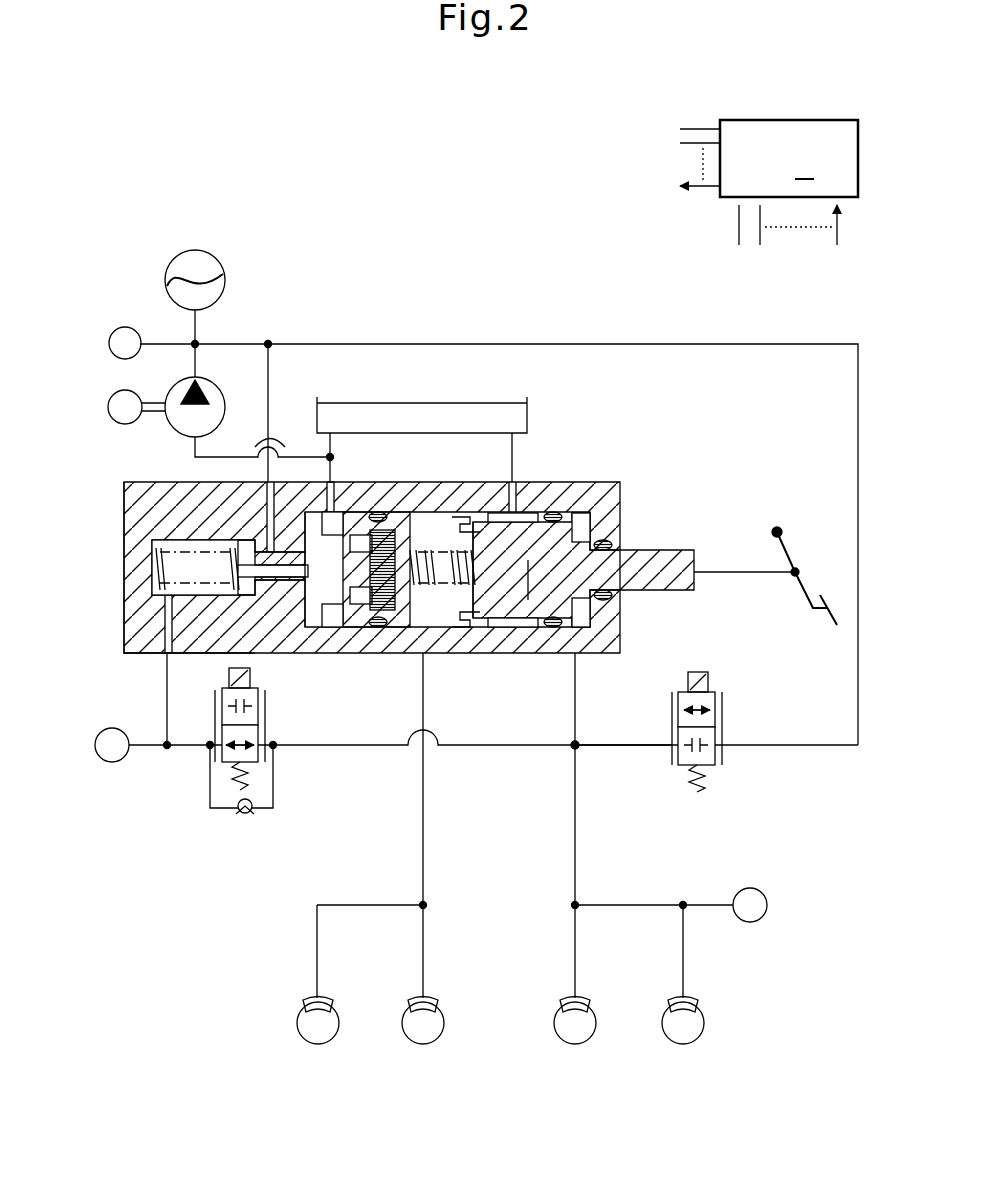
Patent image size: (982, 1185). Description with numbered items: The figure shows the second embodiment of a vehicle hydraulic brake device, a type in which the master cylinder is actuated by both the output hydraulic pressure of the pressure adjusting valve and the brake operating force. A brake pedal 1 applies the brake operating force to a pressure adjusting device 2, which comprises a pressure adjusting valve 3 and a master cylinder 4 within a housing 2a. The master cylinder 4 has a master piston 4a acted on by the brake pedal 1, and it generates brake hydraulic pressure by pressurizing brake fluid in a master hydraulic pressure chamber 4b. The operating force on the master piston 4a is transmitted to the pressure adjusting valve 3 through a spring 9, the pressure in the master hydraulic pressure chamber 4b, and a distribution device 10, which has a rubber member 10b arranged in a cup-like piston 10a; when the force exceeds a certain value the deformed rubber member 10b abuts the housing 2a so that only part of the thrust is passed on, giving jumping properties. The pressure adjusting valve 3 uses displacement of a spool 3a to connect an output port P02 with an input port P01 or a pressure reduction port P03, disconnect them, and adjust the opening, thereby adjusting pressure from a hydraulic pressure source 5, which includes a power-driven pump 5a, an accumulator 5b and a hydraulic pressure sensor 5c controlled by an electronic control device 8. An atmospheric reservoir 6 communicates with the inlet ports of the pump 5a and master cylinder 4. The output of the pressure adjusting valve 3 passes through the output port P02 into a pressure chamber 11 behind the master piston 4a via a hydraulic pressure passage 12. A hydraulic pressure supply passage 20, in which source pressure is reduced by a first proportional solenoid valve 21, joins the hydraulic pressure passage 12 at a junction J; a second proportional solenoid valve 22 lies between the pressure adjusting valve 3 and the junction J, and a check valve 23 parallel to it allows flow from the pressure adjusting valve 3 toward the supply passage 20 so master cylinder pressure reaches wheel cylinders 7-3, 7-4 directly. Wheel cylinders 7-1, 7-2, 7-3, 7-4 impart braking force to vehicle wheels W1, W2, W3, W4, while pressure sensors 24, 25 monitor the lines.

The brake pedal 1 is at (822, 598).
The pressure adjusting device 2 is at (603, 483).
The housing 2a is at (140, 505).
The pressure adjusting valve 3 is at (272, 600).
The spool 3a is at (320, 630).
The master cylinder 4 is at (555, 508).
The master piston 4a is at (548, 628).
The master hydraulic pressure chamber 4b is at (478, 628).
The hydraulic pressure source 5 is at (468, 470).
The power-driven pump 5a is at (218, 400).
The accumulator 5b is at (200, 262).
The hydraulic pressure sensor 5c is at (112, 340).
The atmospheric reservoir 6 is at (528, 404).
The electronic control device 8 is at (761, 185).
The spring 9 is at (438, 530).
The distribution device 10 is at (398, 508).
The cup-like piston 10a is at (410, 632).
The rubber member 10b is at (378, 630).
The pressure chamber 11 is at (583, 619).
The hydraulic pressure passage 12 is at (305, 750).
The hydraulic pressure supply passage 20 is at (642, 745).
The first proportional solenoid valve 21 is at (718, 755).
The second proportional solenoid valve 22 is at (210, 752).
The check valve 23 is at (238, 812).
The pressure sensor 24 is at (114, 763).
The pressure sensor 25 is at (762, 888).
The wheel cylinder 7-1 is at (713, 1036).
The wheel cylinder 7-2 is at (571, 1027).
The wheel cylinder 7-3 is at (416, 1022).
The wheel cylinder 7-4 is at (293, 1040).
The vehicle wheel W1 is at (688, 1029).
The vehicle wheel W2 is at (570, 1029).
The vehicle wheel W3 is at (428, 1029).
The vehicle wheel W4 is at (314, 1029).
The junction J is at (578, 748).
The input port P01 is at (244, 500).
The output port P02 is at (140, 660).
The pressure reduction port P03 is at (340, 500).